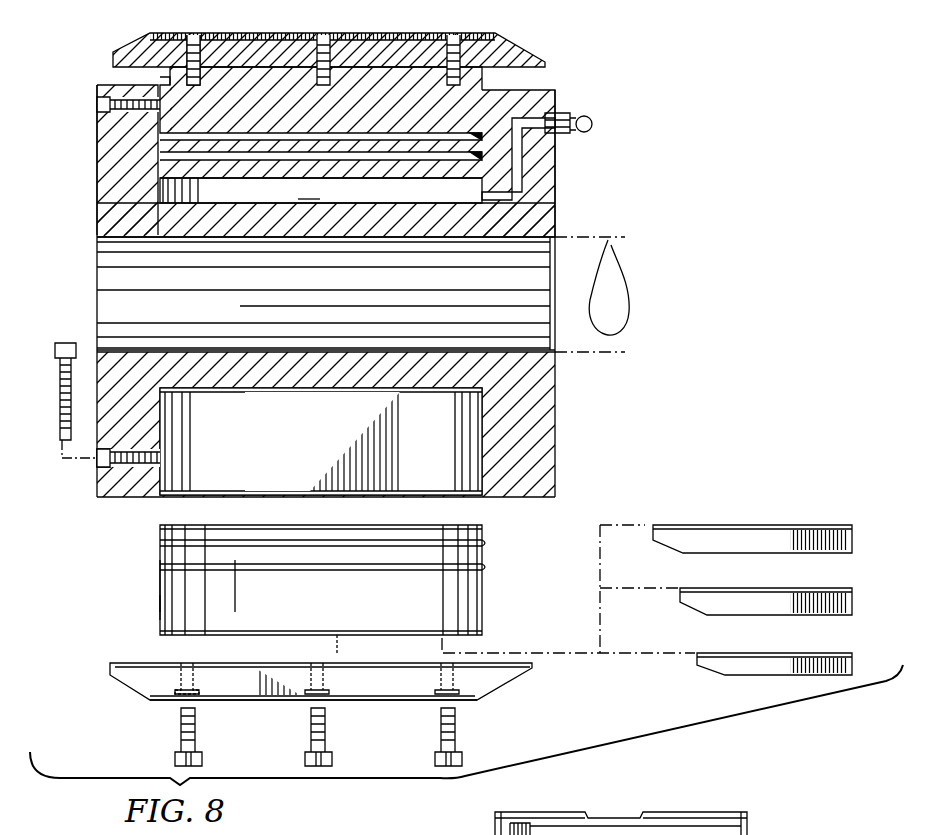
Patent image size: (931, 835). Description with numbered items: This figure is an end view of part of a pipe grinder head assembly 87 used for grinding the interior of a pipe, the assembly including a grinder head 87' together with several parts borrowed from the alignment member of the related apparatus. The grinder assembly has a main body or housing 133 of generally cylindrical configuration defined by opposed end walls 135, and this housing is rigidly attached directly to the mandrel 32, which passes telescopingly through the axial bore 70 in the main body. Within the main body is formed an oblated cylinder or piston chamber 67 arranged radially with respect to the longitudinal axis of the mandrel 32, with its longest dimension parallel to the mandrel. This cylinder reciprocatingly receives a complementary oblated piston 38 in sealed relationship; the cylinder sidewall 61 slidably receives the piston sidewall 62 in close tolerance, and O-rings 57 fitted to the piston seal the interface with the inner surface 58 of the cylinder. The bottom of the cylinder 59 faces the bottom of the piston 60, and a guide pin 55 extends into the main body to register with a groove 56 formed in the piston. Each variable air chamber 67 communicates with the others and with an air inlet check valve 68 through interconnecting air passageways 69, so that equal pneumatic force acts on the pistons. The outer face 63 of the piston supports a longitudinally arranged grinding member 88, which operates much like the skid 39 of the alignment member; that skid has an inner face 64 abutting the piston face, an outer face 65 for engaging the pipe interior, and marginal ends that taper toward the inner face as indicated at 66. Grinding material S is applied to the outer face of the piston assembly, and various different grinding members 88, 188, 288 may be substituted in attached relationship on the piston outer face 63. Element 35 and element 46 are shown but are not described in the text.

The mandrel 32 is at (596, 232).
The cover block 35 is at (555, 105).
The oblated piston 38 is at (500, 84).
The skid 39 is at (532, 666).
The mounting bar 46 is at (722, 812).
The guide pin 55 is at (55, 343).
The groove 56 is at (160, 80).
The O-rings 57 is at (470, 155).
The inner surface of cylinder 58 is at (478, 180).
The bottom of the cylinder 59 is at (366, 183).
The bottom of the piston 60 is at (198, 184).
The cylinder sidewall 61 is at (478, 432).
The piston sidewall 62 is at (322, 611).
The outer face of the piston 63 is at (320, 665).
The inner face of skid 64 is at (272, 665).
The outer face of skid 65 is at (360, 700).
The tapered marginal ends 66 is at (142, 690).
The variable air chamber 67 is at (309, 190).
The air inlet check valve 68 is at (590, 116).
The air passageways 69 is at (517, 170).
The axial bore 70 is at (312, 240).
The pipe grinder head assembly 87 is at (297, 291).
The grinder head 87' is at (367, 424).
The grinding member 88 is at (505, 45).
The main body or housing 133 is at (555, 212).
The end walls 135 is at (97, 122).
The grinding member 188 is at (850, 606).
The grinding member 288 is at (852, 660).
The grinding material S is at (405, 12).